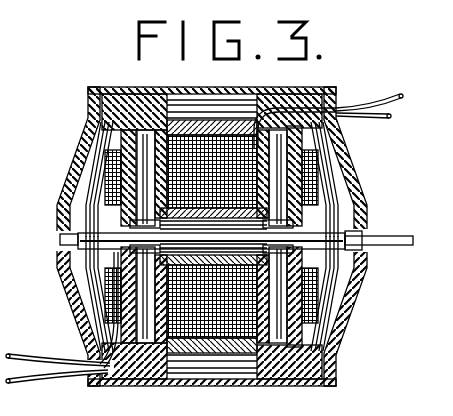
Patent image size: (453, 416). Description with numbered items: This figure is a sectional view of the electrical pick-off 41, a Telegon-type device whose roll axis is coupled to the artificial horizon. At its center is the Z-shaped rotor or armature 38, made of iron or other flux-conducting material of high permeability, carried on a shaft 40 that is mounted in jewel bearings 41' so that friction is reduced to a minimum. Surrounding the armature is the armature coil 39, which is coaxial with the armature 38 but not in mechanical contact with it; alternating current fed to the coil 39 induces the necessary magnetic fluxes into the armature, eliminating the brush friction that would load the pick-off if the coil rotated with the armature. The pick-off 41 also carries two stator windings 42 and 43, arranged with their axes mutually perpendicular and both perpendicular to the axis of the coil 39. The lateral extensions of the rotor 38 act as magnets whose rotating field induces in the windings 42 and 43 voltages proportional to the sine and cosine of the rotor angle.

The Z-shaped rotor or armature 38 is at (318, 182).
The armature coil 39 is at (242, 132).
The shaft 40 is at (350, 230).
The electrical pick-off 41 is at (70, 236).
The jewel bearings 41' is at (217, 233).
The stator winding 42 is at (337, 279).
The stator winding 43 is at (318, 294).